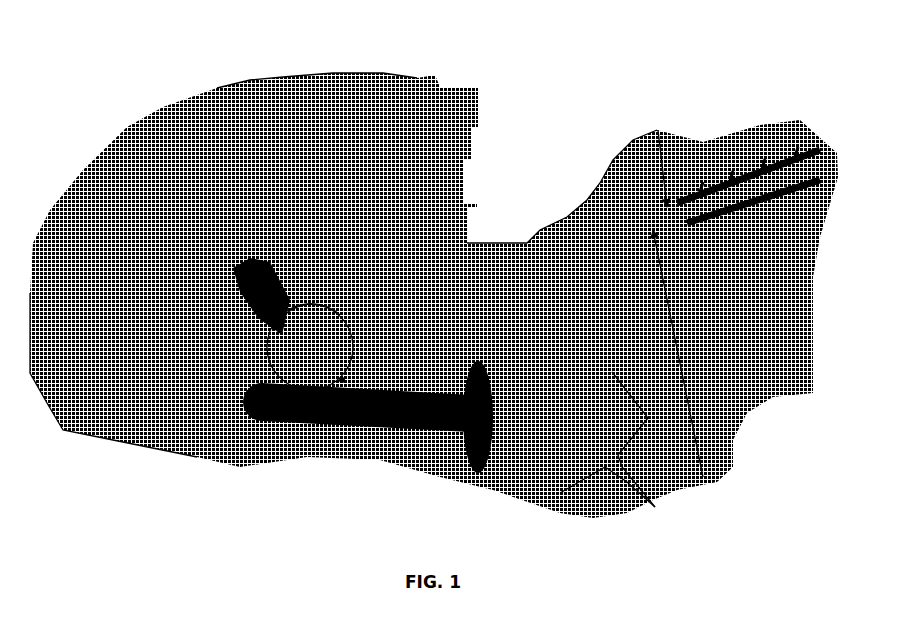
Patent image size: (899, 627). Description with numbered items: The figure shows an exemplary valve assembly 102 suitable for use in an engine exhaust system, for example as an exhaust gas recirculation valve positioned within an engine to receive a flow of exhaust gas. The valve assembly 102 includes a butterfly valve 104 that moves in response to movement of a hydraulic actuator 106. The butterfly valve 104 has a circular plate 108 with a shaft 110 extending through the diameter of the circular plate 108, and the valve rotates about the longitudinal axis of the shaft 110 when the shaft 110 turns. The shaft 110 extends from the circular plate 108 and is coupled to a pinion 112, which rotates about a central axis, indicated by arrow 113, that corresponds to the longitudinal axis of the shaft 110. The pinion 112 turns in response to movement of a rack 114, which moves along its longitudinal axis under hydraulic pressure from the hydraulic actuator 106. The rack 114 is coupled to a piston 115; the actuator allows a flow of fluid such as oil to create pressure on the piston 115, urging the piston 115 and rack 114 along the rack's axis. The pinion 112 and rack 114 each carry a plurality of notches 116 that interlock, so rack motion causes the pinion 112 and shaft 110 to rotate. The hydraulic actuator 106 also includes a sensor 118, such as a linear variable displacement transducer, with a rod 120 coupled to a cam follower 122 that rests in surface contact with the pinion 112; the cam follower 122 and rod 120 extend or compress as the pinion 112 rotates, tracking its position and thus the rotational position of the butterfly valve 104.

The valve assembly 102 is at (163, 107).
The butterfly valve 104 is at (130, 355).
The hydraulic actuator 106 is at (612, 453).
The circular plate 108 is at (323, 123).
The shaft 110 is at (247, 305).
The pinion 112 is at (347, 307).
The arrow 113 is at (328, 302).
The rack 114 is at (283, 427).
The piston 115 is at (485, 477).
The notches 116 is at (342, 377).
The sensor 118 is at (765, 205).
The rod 120 is at (467, 288).
The cam follower 122 is at (368, 303).